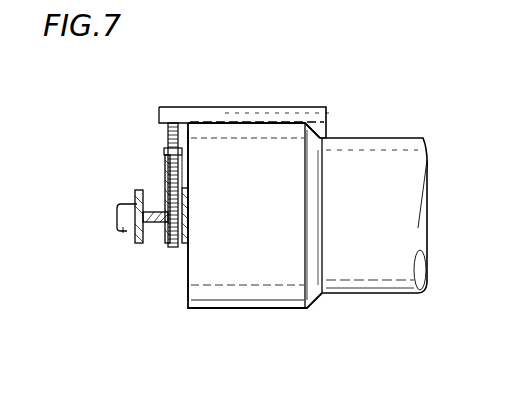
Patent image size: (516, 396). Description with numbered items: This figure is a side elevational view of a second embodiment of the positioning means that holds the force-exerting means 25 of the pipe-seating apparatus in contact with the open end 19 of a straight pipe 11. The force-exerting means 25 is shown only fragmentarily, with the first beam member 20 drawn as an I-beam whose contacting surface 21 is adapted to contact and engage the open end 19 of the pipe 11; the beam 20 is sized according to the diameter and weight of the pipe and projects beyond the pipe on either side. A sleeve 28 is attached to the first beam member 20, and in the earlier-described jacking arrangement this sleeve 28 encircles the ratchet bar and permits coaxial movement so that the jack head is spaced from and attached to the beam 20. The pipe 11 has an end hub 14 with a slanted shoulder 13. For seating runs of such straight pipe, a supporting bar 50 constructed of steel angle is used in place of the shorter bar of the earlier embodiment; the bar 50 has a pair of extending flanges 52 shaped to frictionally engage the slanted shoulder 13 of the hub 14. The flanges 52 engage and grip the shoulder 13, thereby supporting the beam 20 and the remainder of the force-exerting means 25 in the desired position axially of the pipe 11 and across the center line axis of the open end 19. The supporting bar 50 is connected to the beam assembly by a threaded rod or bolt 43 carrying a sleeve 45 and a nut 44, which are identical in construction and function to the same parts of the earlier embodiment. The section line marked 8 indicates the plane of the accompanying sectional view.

The section line 8- 8 is at (343, 78).
The pipe 11 is at (418, 137).
The slanted shoulder 13 is at (321, 298).
The end hub 14 is at (248, 311).
The open end 19 is at (188, 282).
The first beam member 20 is at (146, 258).
The contacting surface 21 is at (190, 217).
The force-exerting means 25 is at (101, 182).
The sleeve 28 is at (100, 249).
The threaded rod 43 is at (167, 138).
The nut 44 is at (163, 153).
The sleeve 45 is at (183, 177).
The supporting bar 50 is at (212, 110).
The flanges 52 is at (318, 123).